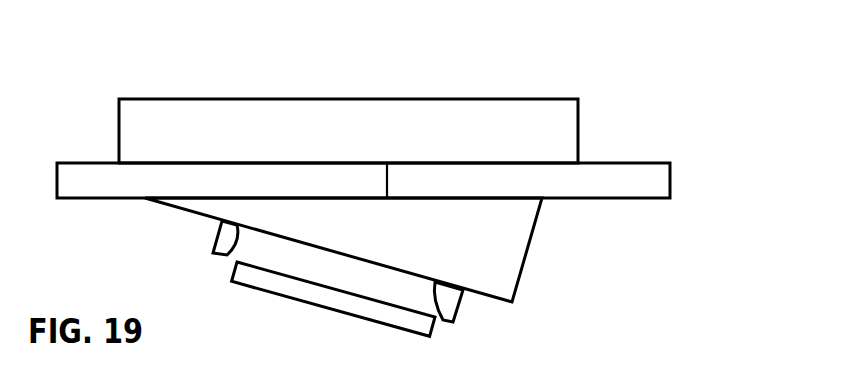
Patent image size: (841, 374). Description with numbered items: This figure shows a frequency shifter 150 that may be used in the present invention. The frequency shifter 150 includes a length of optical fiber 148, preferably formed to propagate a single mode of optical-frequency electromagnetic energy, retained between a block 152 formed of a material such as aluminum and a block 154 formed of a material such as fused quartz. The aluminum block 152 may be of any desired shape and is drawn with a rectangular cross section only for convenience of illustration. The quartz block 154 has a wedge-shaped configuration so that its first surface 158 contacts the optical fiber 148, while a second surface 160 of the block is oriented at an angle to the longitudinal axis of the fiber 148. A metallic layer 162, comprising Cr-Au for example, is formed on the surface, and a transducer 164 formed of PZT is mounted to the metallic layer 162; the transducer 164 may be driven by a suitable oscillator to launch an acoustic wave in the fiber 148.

The optical fiber 148 is at (647, 162).
The frequency shifter 150 is at (594, 83).
The block 152 is at (327, 83).
The block 154 is at (537, 218).
The first surface 158 is at (387, 198).
The second surface 160 is at (441, 320).
The metallic layer 162 is at (225, 257).
The transducer 164 is at (309, 303).